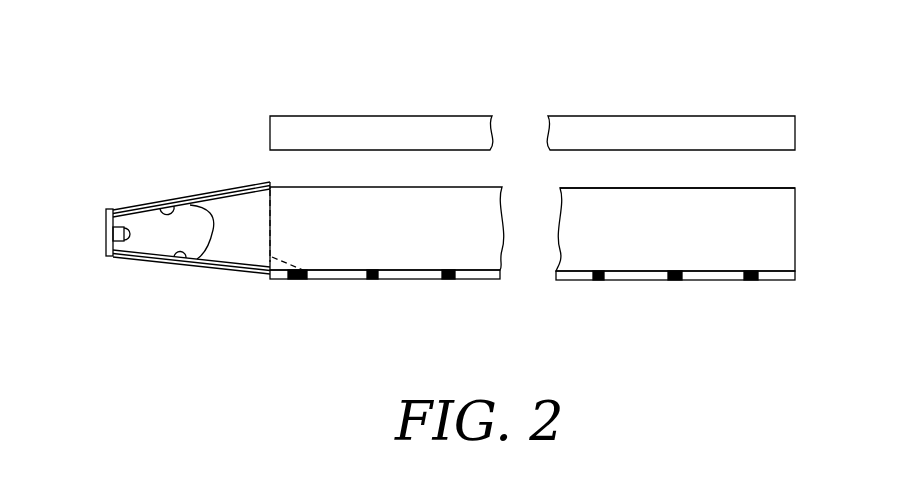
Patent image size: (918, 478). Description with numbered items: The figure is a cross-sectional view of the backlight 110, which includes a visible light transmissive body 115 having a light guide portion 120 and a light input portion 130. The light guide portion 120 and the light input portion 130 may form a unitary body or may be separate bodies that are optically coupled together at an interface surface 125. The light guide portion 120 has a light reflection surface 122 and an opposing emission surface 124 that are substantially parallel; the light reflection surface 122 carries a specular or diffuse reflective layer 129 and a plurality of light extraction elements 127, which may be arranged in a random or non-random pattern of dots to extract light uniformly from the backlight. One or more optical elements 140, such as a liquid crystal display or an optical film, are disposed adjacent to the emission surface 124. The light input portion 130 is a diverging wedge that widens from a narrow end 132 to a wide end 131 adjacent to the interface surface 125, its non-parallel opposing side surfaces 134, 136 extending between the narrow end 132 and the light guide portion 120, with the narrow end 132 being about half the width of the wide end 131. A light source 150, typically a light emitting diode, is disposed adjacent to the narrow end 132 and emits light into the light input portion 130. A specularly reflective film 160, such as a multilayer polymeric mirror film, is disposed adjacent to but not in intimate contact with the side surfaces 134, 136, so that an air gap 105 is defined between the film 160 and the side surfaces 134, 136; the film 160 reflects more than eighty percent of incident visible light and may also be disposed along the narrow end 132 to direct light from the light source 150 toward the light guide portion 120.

The air gap 105 is at (228, 232).
The backlight 110 is at (378, 66).
The visible light transmissive body 115 is at (271, 176).
The light guide portion 120 is at (717, 172).
The light reflection surface 122 is at (727, 270).
The emission surface 124 is at (635, 187).
The interface surface 125 is at (313, 281).
The light extraction elements 127 is at (370, 280).
The reflective layer 129 is at (641, 281).
The light input portion 130 is at (177, 174).
The wide end 131 is at (270, 262).
The narrow end 132 is at (113, 210).
The side surface 134 is at (158, 208).
The side surface 136 is at (188, 259).
The optical element 140 is at (780, 133).
The light source 150 is at (127, 257).
The specularly reflective film 160 is at (140, 208).